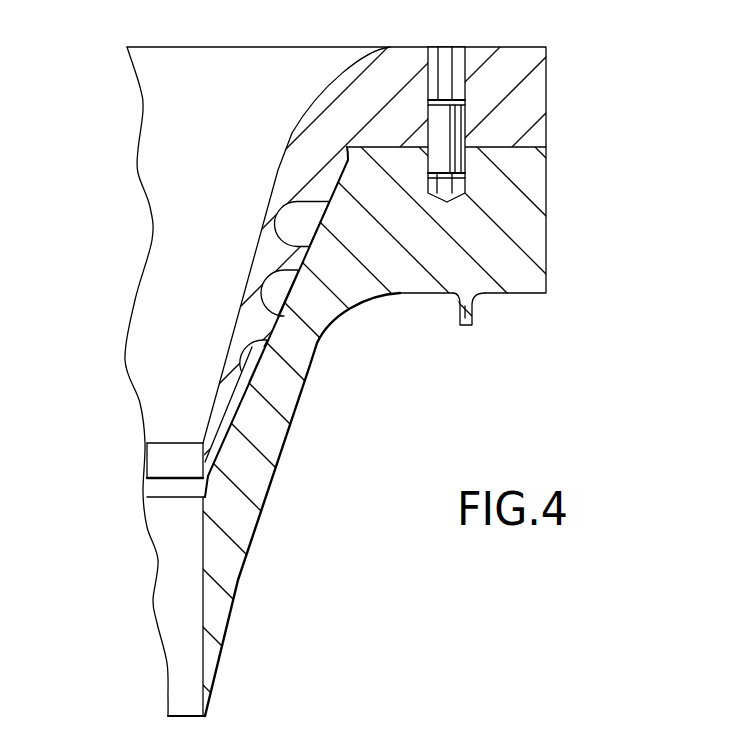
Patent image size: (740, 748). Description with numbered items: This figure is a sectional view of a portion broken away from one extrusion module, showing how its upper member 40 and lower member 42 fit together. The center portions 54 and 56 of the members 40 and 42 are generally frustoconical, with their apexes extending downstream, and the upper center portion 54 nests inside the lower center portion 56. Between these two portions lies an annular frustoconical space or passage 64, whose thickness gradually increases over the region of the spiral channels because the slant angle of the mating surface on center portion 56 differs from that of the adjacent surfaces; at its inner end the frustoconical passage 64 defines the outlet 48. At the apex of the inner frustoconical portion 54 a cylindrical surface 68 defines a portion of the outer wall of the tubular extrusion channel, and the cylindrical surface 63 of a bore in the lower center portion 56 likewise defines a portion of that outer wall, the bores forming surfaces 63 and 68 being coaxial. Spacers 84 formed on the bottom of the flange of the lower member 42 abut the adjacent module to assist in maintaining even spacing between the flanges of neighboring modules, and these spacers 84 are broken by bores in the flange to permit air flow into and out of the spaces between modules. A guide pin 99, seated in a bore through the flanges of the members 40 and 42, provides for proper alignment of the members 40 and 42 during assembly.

The upper member 40 is at (528, 70).
The lower member 42 is at (538, 232).
The outlet 48 is at (153, 493).
The center portion of upper member 54 is at (152, 256).
The center portion of lower member 56 is at (257, 493).
The cylindrical surface 63 is at (188, 637).
The frustoconical passage 64 is at (233, 422).
The cylindrical surface 68 is at (158, 460).
The spacers 84 is at (465, 324).
The guide pins 99 is at (457, 128).